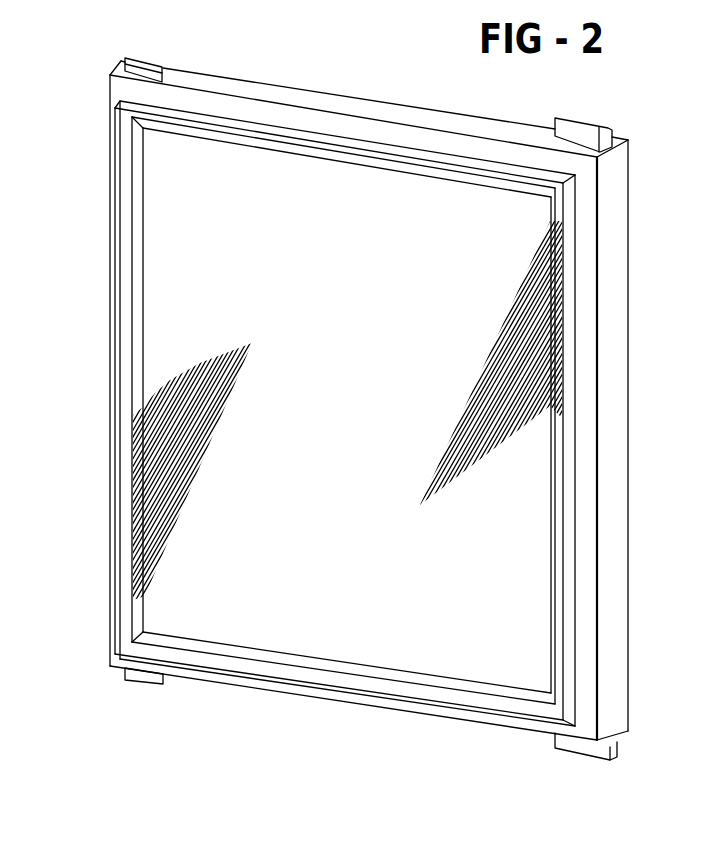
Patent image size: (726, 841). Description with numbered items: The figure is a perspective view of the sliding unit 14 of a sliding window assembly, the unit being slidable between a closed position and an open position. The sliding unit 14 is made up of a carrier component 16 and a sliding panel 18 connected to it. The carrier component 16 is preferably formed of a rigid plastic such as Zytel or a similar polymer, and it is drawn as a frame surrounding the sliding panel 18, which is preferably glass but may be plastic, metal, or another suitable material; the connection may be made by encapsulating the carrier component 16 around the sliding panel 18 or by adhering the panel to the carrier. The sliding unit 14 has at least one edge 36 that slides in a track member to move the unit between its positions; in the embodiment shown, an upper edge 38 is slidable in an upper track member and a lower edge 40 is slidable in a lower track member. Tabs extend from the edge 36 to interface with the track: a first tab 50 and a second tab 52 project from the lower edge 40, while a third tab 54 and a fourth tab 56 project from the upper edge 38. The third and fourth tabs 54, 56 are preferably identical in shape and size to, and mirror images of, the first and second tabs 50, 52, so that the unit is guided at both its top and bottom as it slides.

The sliding unit 14 is at (421, 86).
The carrier component 16 is at (621, 287).
The sliding panel 18 is at (535, 475).
The edge 36 is at (281, 78).
The upper edge 38 is at (318, 95).
The lower edge 40 is at (357, 705).
The first tab 50 is at (585, 758).
The second tab 52 is at (128, 683).
The third tab 54 is at (594, 120).
The fourth tab 56 is at (143, 56).